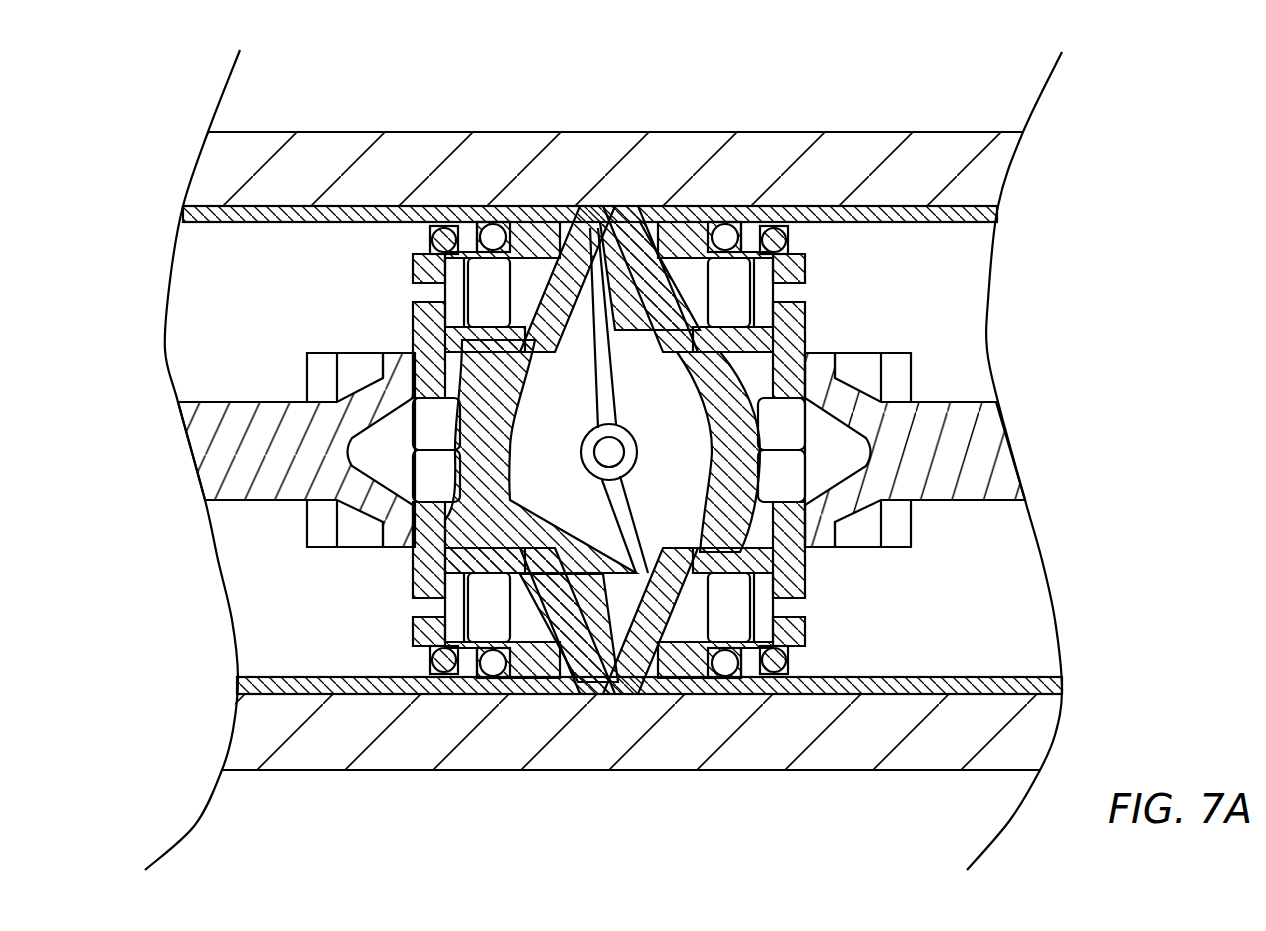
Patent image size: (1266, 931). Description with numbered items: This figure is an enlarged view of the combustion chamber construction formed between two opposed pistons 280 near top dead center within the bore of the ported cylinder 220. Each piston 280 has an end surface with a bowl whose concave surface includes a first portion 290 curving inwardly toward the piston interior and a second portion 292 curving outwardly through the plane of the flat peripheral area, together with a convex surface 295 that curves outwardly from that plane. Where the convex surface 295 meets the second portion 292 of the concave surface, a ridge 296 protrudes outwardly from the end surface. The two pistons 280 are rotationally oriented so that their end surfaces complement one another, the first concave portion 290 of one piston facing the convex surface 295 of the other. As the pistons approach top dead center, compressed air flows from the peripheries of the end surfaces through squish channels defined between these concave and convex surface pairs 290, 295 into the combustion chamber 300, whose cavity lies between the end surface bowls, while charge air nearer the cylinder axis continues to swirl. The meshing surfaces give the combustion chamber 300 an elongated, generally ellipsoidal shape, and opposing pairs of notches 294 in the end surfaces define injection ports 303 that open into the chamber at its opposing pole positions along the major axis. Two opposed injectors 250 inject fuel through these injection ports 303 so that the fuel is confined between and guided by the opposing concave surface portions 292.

The ported cylinder 220 is at (880, 132).
The piston 280 is at (192, 225).
The second portion of concave surface 292 is at (655, 362).
The notch 294 is at (493, 452).
The injection port 303 is at (600, 412).
The injector 250 is at (617, 463).
The first portion of concave surface 290 is at (555, 323).
The convex surface 295 is at (598, 318).
The ridge 296 is at (650, 292).
The combustion chamber 300 is at (720, 567).